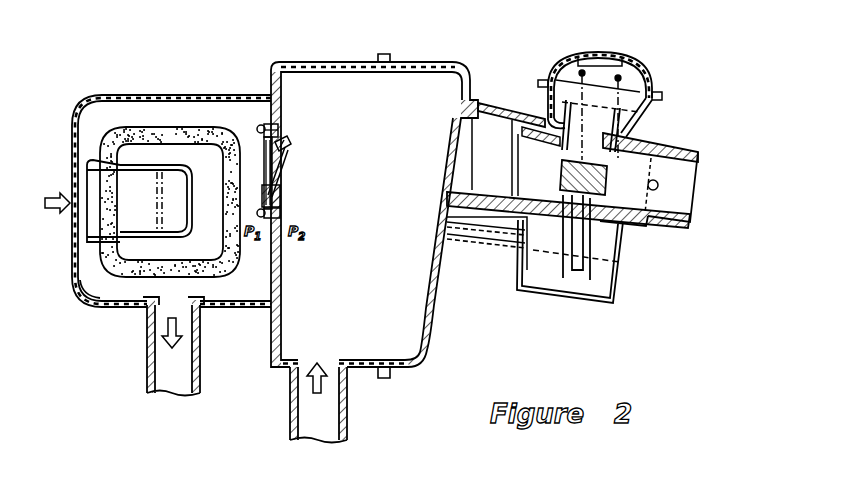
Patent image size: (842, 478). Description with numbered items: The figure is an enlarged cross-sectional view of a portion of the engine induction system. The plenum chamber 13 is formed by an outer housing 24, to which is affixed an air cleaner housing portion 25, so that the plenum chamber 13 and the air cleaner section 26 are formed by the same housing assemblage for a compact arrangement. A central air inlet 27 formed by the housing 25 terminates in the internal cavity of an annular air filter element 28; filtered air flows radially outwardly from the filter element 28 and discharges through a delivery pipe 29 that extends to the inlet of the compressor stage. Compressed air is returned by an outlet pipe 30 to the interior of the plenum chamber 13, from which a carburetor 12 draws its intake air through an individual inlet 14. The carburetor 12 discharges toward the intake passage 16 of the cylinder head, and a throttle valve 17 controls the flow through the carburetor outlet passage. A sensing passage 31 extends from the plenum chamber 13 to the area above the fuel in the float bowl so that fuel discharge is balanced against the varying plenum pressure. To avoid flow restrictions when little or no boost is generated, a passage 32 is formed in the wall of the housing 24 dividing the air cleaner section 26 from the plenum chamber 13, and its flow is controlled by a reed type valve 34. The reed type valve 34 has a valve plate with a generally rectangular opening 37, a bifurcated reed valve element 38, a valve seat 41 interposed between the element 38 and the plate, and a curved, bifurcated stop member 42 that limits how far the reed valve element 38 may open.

The carburetor 12 is at (622, 38).
The plenum chamber 13 is at (374, 201).
The inlet 14 is at (568, 182).
The intake passage 16 is at (688, 155).
The throttle valve 17 is at (660, 200).
The outer housing 24 is at (374, 195).
The air cleaner housing portion 25 is at (150, 94).
The air cleaner section 26 is at (181, 103).
The central air inlet 27 is at (87, 219).
The annular air filter element 28 is at (130, 133).
The delivery pipe 29 is at (147, 366).
The outlet pipe 30 is at (290, 400).
The sensing passage 31 is at (484, 240).
The passage 32 is at (284, 146).
The reed type valve 34 is at (327, 62).
The opening 37 is at (279, 123).
The reed valve element 38 is at (283, 136).
The valve seat 41 is at (262, 132).
The stop member 42 is at (284, 155).